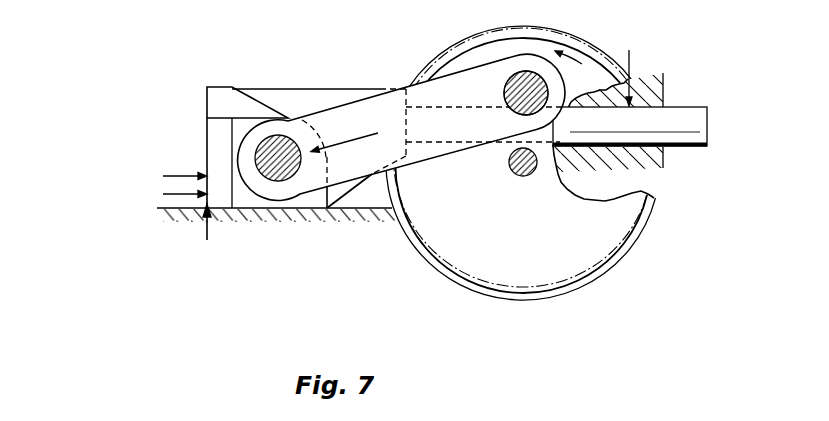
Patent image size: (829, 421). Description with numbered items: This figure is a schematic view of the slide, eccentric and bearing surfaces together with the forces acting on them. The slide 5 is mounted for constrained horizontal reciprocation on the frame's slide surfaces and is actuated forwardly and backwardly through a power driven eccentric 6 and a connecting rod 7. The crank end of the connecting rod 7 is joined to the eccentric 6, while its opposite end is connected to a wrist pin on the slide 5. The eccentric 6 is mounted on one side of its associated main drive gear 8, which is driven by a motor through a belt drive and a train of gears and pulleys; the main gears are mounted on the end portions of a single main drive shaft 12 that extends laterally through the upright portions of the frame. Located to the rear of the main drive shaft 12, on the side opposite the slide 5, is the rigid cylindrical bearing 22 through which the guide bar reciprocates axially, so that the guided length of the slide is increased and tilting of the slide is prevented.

The slide 5 is at (207, 149).
The eccentric 6 is at (515, 91).
The connecting rod 7 is at (399, 89).
The main drive gear 8 is at (446, 53).
The main drive shaft 12 is at (522, 177).
The cylindrical bearing 22 is at (636, 125).